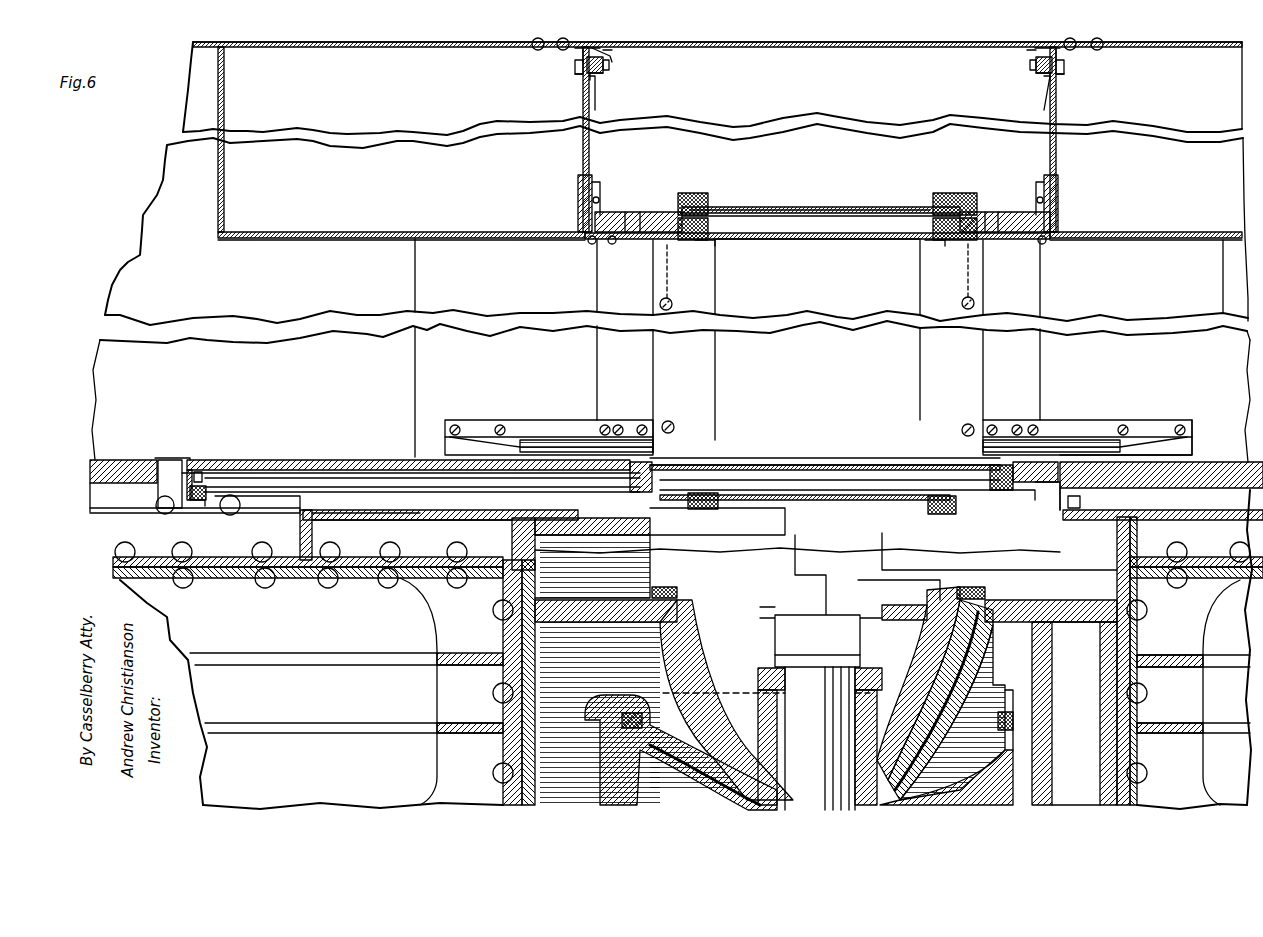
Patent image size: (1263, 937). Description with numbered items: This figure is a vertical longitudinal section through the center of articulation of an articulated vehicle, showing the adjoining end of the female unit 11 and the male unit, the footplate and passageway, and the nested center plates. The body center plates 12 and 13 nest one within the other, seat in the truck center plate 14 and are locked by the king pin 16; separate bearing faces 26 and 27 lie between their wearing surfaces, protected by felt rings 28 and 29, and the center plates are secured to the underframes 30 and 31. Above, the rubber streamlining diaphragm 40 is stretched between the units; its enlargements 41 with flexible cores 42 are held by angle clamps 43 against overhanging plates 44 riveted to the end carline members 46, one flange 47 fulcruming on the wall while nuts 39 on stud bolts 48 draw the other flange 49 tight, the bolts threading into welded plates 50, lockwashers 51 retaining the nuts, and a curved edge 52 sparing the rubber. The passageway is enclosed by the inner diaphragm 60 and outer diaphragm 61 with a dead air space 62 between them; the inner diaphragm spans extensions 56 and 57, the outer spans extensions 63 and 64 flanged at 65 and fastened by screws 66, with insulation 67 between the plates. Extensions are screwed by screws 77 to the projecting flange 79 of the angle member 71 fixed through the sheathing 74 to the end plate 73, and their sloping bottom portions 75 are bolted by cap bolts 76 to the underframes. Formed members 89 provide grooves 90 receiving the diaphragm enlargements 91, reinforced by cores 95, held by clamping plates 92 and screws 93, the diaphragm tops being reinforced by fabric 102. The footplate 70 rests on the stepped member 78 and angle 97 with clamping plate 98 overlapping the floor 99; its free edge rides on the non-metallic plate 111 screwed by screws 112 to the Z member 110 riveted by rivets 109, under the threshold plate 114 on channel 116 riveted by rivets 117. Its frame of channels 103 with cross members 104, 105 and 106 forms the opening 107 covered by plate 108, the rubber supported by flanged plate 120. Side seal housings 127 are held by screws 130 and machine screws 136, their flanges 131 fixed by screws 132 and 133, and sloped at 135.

The female unit 11 is at (170, 196).
The body center plate 12 is at (935, 600).
The body center plate 13 is at (960, 665).
The truck center plate 14 is at (628, 780).
The locking king pin 16 is at (766, 712).
The bearing face 26 is at (930, 662).
The bearing face 27 is at (950, 790).
The felt ring 28 is at (988, 593).
The felt ring 29 is at (1014, 718).
The underframe 30 is at (1190, 649).
The underframe 31 is at (324, 675).
The nut 39 is at (605, 68).
The diaphragm 40 is at (805, 125).
The enlargement 41 is at (580, 56).
The center core 42 is at (602, 48).
The clamping member 43 is at (600, 80).
The overhanging plate member 44 is at (592, 44).
The end carline member 46 is at (532, 50).
The flange 47 is at (596, 84).
The stud bolt 48 is at (574, 66).
The flange 49 is at (606, 76).
The metal plate 50 is at (580, 80).
The lockwasher 51 is at (610, 64).
The curved edge 52 is at (614, 52).
The extension structure 56 is at (1010, 237).
The extension structure 57 is at (640, 234).
The diaphragm 60 is at (790, 241).
The second diaphragm 61 is at (805, 207).
The dead air space 62 is at (822, 214).
The extension 63 is at (995, 212).
The extension 64 is at (645, 210).
The flange 65 is at (598, 186).
The screw 66 is at (599, 200).
The insulation 67 is at (625, 218).
The footplate 70 is at (322, 460).
The angle member 71 is at (590, 182).
The end plate 73 is at (532, 232).
The end wall sheathing 74 is at (590, 148).
The horizontal bottom portion 75 is at (632, 505).
The cap bolt 76 is at (483, 517).
The screw 77 is at (590, 243).
The stepped channel-shaped member 78 is at (1030, 495).
The projecting flange 79 is at (615, 244).
The formed member 89 is at (708, 212).
The groove 90 is at (940, 200).
The enlargement 91 is at (702, 198).
The clamping plate 92 is at (712, 243).
The screw 93 is at (672, 299).
The flexible core 95 is at (955, 200).
The angle member 97 is at (1062, 470).
The clamping plate 98 is at (1040, 462).
The floor 99 is at (100, 460).
The fabric 102 is at (862, 210).
The inverted channel 103 is at (390, 519).
The cross member 104 is at (210, 470).
The cross member 105 is at (988, 479).
The cross member 106 is at (622, 460).
The rectangular opening 107 is at (803, 470).
The removable metal plate 108 is at (842, 478).
The rivet 109 is at (245, 500).
The Z-shaped member 110 is at (218, 508).
The non-metallic plate 111 is at (215, 480).
The countersunk screw 112 is at (196, 506).
The arcuate threshold plate 114 is at (152, 457).
The channel member 116 is at (158, 490).
The rivet 117 is at (160, 506).
The flanged plate member 120 is at (362, 484).
The housing 127 is at (565, 440).
The screw 130 is at (512, 440).
The upwardly turned flange 131 is at (540, 420).
The screw 132 is at (618, 425).
The screw 133 is at (498, 426).
The sloped end 135 is at (1186, 455).
The machine screw 136 is at (648, 428).